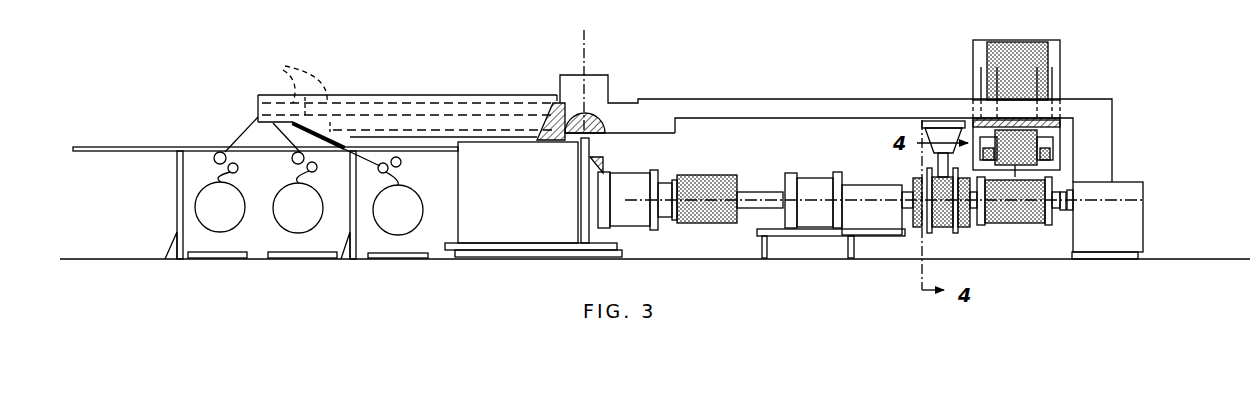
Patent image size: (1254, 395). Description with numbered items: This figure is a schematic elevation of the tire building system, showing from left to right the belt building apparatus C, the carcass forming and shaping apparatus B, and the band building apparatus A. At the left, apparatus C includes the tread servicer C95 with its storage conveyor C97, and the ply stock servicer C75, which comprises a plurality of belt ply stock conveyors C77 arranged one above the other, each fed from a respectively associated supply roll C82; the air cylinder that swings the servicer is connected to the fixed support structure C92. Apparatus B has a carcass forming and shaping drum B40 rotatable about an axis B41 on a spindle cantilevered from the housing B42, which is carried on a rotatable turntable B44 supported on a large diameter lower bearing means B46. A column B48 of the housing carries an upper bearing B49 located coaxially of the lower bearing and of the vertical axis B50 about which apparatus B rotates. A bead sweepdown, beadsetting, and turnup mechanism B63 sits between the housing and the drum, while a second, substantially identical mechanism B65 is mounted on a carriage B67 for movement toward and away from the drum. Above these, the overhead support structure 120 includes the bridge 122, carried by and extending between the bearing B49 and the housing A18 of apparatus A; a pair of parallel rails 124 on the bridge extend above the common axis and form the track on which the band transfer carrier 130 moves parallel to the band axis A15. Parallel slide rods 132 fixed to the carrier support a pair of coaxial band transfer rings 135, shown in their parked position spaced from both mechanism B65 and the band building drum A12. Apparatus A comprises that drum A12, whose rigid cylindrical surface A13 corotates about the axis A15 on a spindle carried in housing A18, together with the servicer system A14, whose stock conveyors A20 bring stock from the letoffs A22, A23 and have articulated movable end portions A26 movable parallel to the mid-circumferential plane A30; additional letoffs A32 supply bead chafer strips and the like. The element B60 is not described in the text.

The tread servicer C95 is at (145, 141).
The storage conveyor C97 is at (186, 146).
The supply rolls C82 is at (308, 187).
The ply stock servicer C75 is at (515, 92).
The belt ply stock conveyors C77 is at (284, 68).
The apparatus for building an endless inextensible belt C is at (420, 92).
The fixed support structure C92 is at (439, 158).
The vertical axis B50 is at (580, 46).
The upper bearing B49 is at (580, 114).
The column B48 is at (582, 161).
The housing B42 is at (483, 225).
The rotatable plate or turntable B44 is at (543, 247).
The lower bearing means B46 is at (573, 257).
The bead sweepdown, beadsetting, and turnup mechanism B63 is at (633, 183).
The drive unit B60 is at (705, 177).
The axis B41 is at (748, 190).
The second bead sweepdown, beadsetting, and turnup mechanism B65 is at (813, 183).
The carriage B67 is at (827, 232).
The carcass forming and shaping drum B40 is at (730, 223).
The apparatus for forming, repositioning and shaping the tire carcass B is at (725, 146).
The parallel rails or bars 124 is at (833, 117).
The overhead support structure 120 is at (871, 96).
The bridge 122 is at (907, 99).
The parallel slide rods 132 is at (922, 173).
The band transfer carrier 130 is at (918, 240).
The band transfer rings 135 is at (933, 227).
The mid-circumferential plane A30 is at (1018, 226).
The rigid cylindrical surface A13 is at (1050, 211).
The band building drum A12 is at (1050, 212).
The axis A15 is at (1155, 200).
The housing A18 is at (1135, 192).
The stock conveyors A20 is at (995, 40).
The servicer system A14 is at (1062, 34).
The letoff A23 is at (1074, 86).
The apparatus for building an endless integral tire band A is at (1165, 78).
The letoff A22 is at (1075, 130).
The articulated movable end portion A26 is at (1060, 141).
The additional letoffs A32 is at (1060, 156).